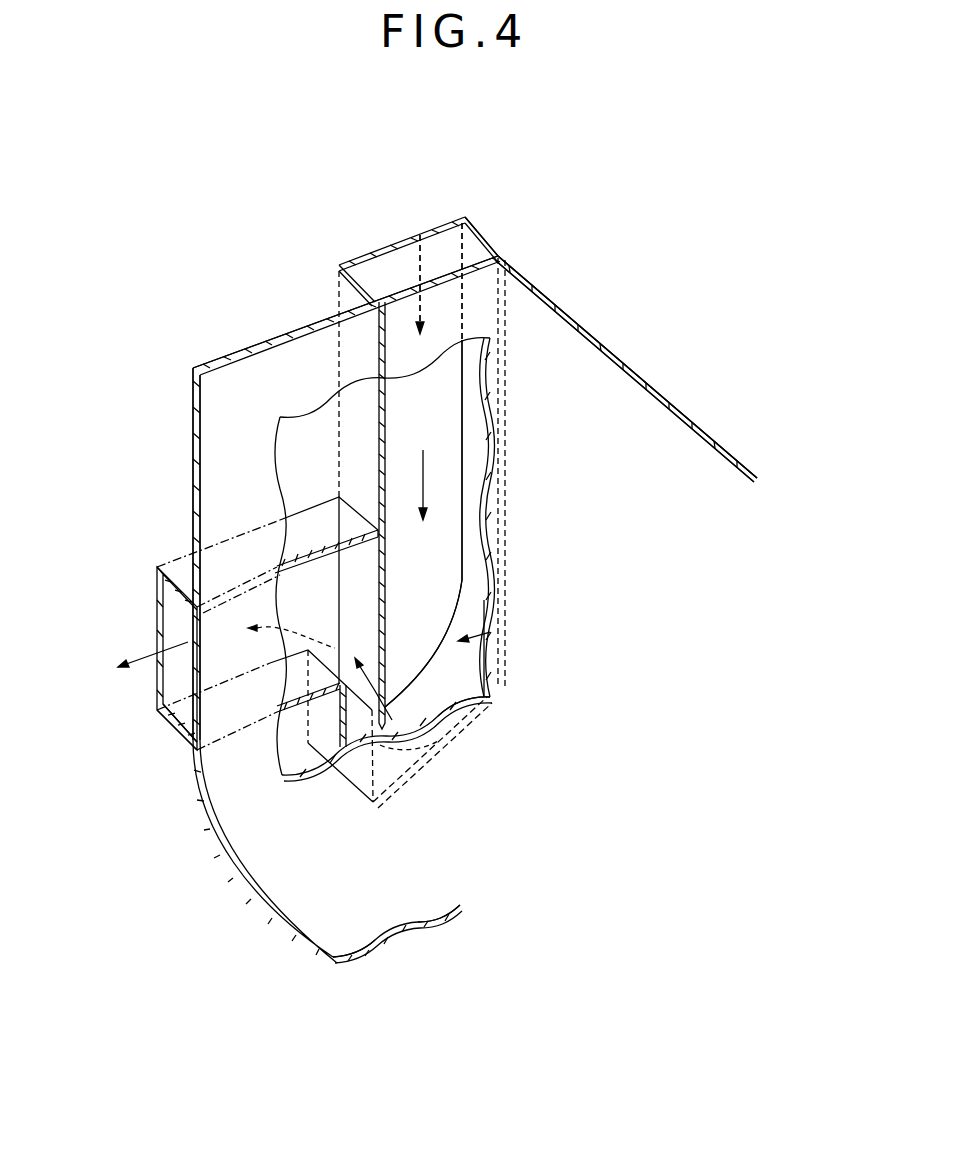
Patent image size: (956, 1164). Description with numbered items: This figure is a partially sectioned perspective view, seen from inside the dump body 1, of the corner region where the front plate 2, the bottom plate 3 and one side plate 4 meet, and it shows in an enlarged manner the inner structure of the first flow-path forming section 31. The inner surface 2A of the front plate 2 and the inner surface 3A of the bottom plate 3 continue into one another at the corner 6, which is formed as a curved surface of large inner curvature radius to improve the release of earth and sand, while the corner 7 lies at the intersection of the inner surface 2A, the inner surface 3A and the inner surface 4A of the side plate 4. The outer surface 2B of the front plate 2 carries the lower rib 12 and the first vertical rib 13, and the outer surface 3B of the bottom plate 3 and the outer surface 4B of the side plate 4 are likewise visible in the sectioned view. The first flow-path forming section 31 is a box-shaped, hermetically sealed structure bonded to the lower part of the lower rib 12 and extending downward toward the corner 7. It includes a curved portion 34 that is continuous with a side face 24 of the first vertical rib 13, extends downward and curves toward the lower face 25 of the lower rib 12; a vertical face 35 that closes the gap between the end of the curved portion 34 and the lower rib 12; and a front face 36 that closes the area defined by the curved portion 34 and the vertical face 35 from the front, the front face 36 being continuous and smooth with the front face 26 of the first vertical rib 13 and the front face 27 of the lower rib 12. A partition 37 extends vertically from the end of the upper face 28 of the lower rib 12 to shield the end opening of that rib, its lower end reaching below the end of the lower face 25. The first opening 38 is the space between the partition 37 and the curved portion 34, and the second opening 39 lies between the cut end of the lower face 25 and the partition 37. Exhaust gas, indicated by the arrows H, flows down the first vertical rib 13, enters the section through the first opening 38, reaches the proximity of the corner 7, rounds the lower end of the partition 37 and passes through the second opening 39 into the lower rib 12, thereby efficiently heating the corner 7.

The body 1 is at (731, 238).
The front plate 2 is at (257, 340).
The inner surface of the front plate 2A is at (225, 376).
The outer surface of the front plate 2B is at (193, 420).
The bottom plate 3 is at (395, 932).
The inner surface of the bottom plate 3A is at (435, 905).
The outer surface of the bottom plate 3B is at (360, 950).
The side plate 4 is at (680, 405).
The inner surface of the side plate 4A is at (702, 455).
The outer surface of the side plate 4B is at (755, 470).
The corner 6 is at (250, 828).
The corner 7 is at (545, 733).
The lower rib 12 is at (178, 565).
The first vertical rib 13 is at (372, 257).
The side face of the first vertical rib 24 is at (475, 247).
The lower face of the lower rib 25 is at (190, 706).
The front face of the first vertical rib 26 is at (440, 420).
The front face of the lower rib 27 is at (315, 585).
The upper face of the lower rib 28 is at (325, 512).
The first flow-path forming section 31 is at (490, 632).
The curved portion 34 is at (445, 688).
The vertical face 35 is at (305, 735).
The front face 36 is at (445, 592).
The partition 37 is at (365, 630).
The first opening 38 is at (463, 662).
The second opening 39 is at (328, 657).
The air flow direction H is at (443, 193).